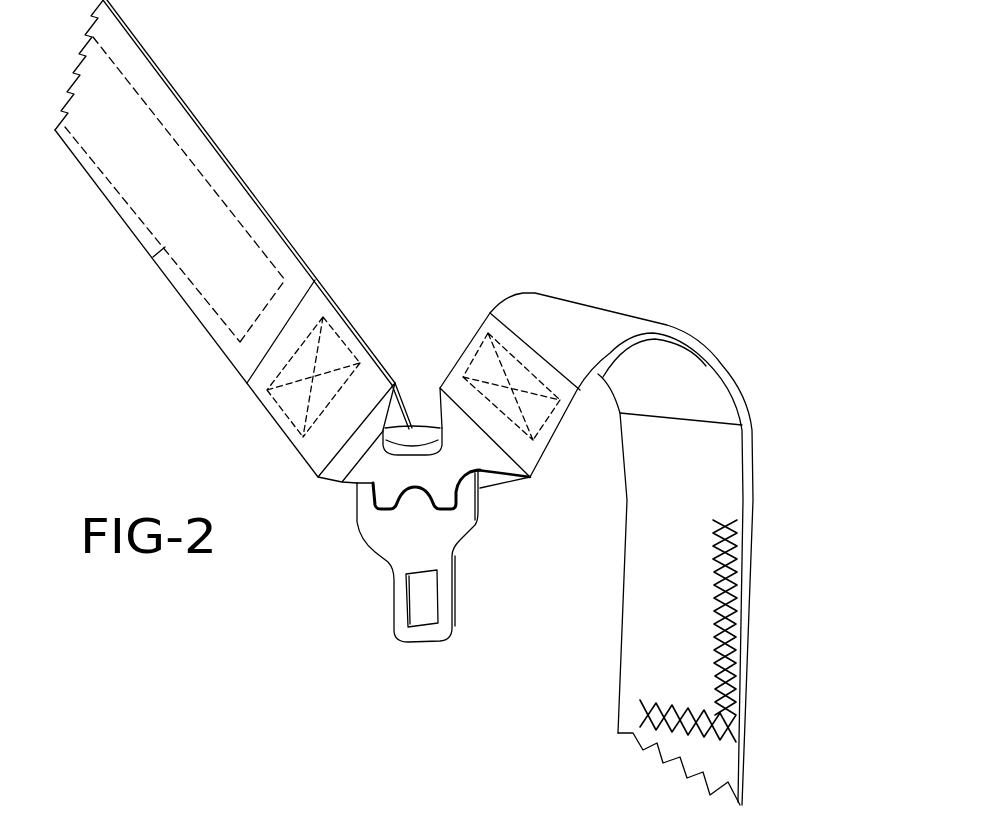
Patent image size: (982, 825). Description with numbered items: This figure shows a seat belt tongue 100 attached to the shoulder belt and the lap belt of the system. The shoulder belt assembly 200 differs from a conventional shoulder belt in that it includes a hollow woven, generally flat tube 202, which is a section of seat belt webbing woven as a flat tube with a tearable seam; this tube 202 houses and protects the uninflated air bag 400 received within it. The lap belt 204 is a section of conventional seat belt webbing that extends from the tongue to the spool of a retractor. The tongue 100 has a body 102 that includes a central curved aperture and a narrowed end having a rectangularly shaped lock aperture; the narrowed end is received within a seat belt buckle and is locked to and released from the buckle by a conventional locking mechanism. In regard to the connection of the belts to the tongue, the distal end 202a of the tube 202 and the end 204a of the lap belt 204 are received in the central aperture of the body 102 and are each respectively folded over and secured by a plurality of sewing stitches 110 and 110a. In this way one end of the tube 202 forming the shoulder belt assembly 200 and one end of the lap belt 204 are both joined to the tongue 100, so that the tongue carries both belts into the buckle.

The seat belt tongue 100 is at (445, 554).
The body 102 is at (447, 528).
The sewing stitches 110 is at (283, 442).
The sewing stitches 110a is at (522, 323).
The shoulder belt assembly 200 is at (437, 402).
The hollow woven flat tube 202 is at (225, 241).
The distal end of tube 202a is at (250, 393).
The lap belt 204 is at (619, 519).
The end of lap belt 204a is at (453, 370).
The air bag 400 is at (147, 262).